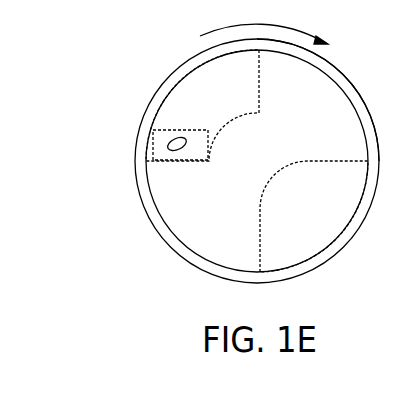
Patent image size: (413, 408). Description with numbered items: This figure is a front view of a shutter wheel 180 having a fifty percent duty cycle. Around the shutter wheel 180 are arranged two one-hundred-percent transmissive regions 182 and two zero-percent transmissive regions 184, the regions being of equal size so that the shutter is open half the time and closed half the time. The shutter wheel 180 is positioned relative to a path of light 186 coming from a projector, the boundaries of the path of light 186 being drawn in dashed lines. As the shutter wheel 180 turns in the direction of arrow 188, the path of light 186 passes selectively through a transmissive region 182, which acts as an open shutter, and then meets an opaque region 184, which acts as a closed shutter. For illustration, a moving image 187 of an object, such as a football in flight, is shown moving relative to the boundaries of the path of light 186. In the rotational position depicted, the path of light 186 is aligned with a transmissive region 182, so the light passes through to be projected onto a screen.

The shutter wheel 180 is at (168, 257).
The 100% transmissive region 182 is at (180, 100).
The 0% transmissive region 184 is at (328, 93).
The path of light 186 is at (182, 129).
The moving image 187 is at (182, 150).
The arrow 188 is at (220, 28).